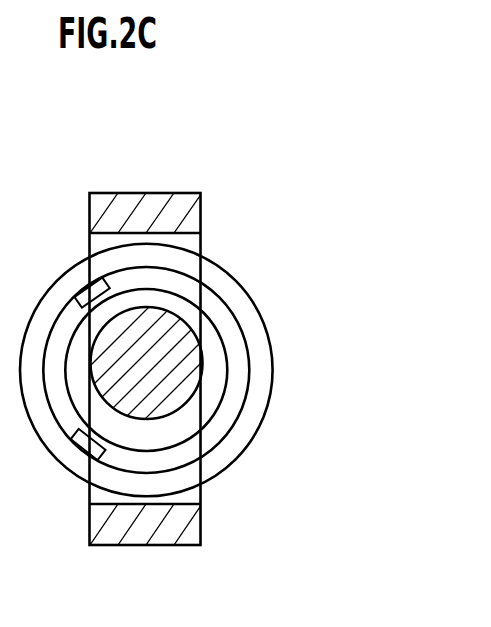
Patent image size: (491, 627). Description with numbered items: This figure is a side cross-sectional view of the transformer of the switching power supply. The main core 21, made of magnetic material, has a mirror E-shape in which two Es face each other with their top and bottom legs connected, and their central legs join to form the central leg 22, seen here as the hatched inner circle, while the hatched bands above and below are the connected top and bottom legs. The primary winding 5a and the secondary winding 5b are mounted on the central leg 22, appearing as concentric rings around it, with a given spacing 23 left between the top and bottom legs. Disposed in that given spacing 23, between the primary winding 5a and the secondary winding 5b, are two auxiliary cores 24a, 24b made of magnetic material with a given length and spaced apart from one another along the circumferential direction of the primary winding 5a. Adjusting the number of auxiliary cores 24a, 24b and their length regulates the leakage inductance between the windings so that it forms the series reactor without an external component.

The main core 21 is at (138, 192).
The central leg 22 is at (180, 402).
The given spacing 23 is at (232, 327).
The primary winding 5a is at (217, 372).
The secondary winding 5b is at (226, 270).
The auxiliary core 24a is at (83, 284).
The auxiliary core 24b is at (78, 447).